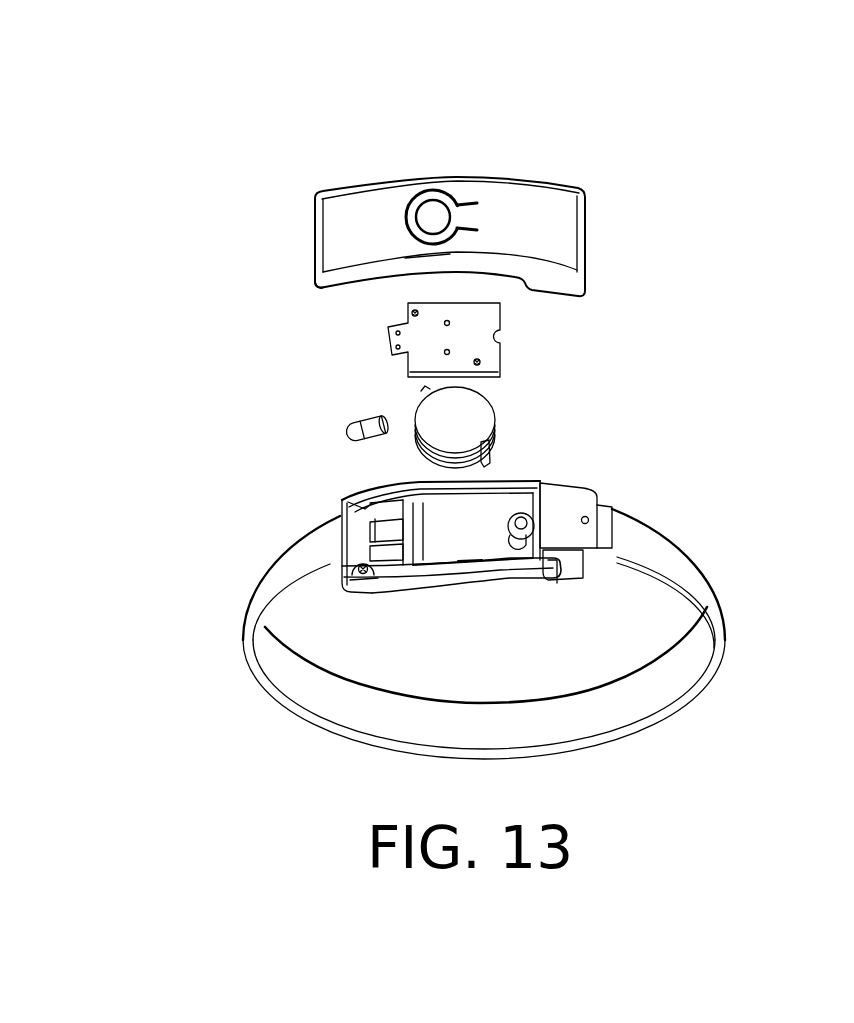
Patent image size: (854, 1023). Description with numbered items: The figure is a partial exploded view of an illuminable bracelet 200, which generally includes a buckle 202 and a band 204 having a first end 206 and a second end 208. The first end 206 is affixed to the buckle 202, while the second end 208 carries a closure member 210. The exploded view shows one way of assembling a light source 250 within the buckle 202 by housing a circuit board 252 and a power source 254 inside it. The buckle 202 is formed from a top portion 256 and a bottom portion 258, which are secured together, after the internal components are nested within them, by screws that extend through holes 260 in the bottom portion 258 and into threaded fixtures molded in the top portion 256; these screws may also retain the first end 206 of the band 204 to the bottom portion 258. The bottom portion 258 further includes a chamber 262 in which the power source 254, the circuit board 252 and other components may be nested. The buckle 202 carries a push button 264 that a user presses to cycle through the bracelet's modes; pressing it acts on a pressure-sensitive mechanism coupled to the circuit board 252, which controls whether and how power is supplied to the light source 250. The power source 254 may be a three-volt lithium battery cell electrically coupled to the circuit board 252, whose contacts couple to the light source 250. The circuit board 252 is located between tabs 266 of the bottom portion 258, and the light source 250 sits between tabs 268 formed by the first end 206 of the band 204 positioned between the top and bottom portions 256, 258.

The illuminable bracelet 200 is at (119, 90).
The buckle 202 is at (521, 215).
The band 204 is at (435, 600).
The first end 206 is at (315, 585).
The second end 208 is at (640, 520).
The closure member 210 is at (557, 517).
The light source 250 is at (363, 422).
The circuit board 252 is at (447, 303).
The power source 254 is at (483, 423).
The top portion 256 is at (587, 238).
The bottom portion 258 is at (469, 561).
The holes 260 is at (363, 572).
The chamber 262 is at (432, 548).
The push button 264 is at (433, 212).
The tabs 266 is at (522, 518).
The tabs 268 is at (447, 548).